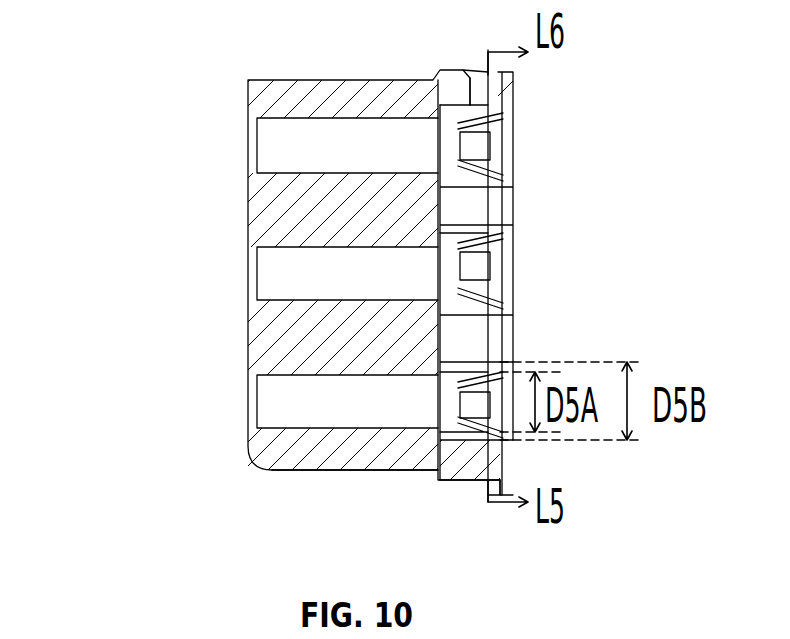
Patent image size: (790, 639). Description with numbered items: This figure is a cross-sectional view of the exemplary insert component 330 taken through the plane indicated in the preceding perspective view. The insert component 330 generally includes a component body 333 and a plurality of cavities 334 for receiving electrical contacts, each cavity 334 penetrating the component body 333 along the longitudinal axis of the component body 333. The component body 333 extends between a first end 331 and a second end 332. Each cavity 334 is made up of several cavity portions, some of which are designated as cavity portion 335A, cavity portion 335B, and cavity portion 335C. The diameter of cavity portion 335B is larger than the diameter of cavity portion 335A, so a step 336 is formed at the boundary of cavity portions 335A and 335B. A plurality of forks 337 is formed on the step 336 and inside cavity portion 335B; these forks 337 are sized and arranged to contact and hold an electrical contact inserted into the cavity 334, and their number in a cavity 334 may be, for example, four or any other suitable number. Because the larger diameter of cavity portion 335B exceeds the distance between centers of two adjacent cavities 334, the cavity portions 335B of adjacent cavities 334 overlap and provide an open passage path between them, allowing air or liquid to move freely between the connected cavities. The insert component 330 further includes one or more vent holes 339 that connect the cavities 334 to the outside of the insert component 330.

The insert component 330 is at (381, 31).
The first end 331 is at (237, 104).
The second end 332 is at (520, 201).
The component body 333 is at (362, 101).
The cavities 334 is at (263, 390).
The cavity portion 335A is at (507, 498).
The cavity portion 335B is at (470, 482).
The cavity portion 335C is at (345, 470).
The step 336 is at (514, 317).
The forks 337 is at (500, 292).
The vent holes 339 is at (484, 86).